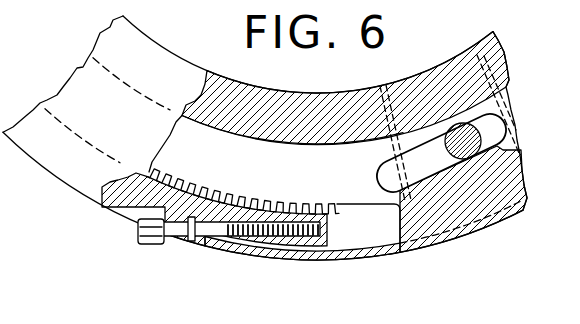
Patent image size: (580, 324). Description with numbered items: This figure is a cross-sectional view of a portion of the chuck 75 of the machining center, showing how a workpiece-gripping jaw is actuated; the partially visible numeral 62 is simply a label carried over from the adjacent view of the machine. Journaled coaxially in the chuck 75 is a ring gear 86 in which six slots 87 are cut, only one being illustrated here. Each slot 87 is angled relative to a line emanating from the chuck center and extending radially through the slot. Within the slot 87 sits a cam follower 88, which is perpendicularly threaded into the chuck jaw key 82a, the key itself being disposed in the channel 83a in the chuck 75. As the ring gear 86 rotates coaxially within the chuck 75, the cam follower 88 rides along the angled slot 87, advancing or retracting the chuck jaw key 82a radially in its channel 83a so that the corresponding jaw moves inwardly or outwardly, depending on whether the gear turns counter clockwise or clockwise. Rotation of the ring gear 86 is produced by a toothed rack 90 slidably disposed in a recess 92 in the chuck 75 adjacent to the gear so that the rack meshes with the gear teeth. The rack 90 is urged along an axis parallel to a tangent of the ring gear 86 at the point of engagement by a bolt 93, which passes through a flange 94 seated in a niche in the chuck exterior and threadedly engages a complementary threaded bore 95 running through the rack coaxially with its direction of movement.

The ring segment 62 is at (49, 6).
The chuck 75 is at (150, 48).
The ring gear 86 is at (163, 141).
The slot 87 is at (380, 176).
The cam follower 88 is at (455, 124).
The chuck jaw key 82a is at (477, 222).
The channel 83a is at (455, 240).
The toothed rack 90 is at (257, 246).
The recess 92 is at (340, 238).
The bolt 93 is at (212, 242).
The flange 94 is at (165, 247).
The threaded bore 95 is at (323, 229).